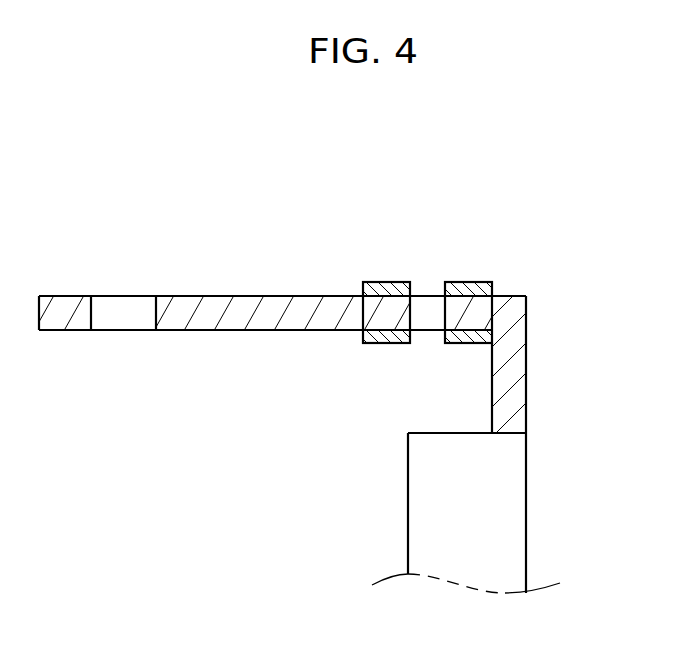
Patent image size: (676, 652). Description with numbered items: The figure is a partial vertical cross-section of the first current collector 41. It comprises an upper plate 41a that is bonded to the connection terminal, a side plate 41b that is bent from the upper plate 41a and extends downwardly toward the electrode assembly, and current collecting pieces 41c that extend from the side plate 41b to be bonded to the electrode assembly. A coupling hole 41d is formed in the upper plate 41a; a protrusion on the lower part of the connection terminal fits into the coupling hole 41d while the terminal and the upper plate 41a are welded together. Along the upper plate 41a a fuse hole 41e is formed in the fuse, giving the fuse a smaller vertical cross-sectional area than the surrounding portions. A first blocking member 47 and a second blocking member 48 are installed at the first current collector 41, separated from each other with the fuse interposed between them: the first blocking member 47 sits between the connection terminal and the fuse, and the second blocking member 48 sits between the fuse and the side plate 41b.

The first current collector 41 is at (539, 262).
The upper plate 41a is at (251, 310).
The side plate 41b is at (526, 374).
The current collecting piece 41c is at (503, 518).
The coupling hole 41d is at (126, 318).
The fuse hole 41e is at (423, 318).
The first blocking member 47 is at (383, 280).
The second blocking member 48 is at (468, 280).